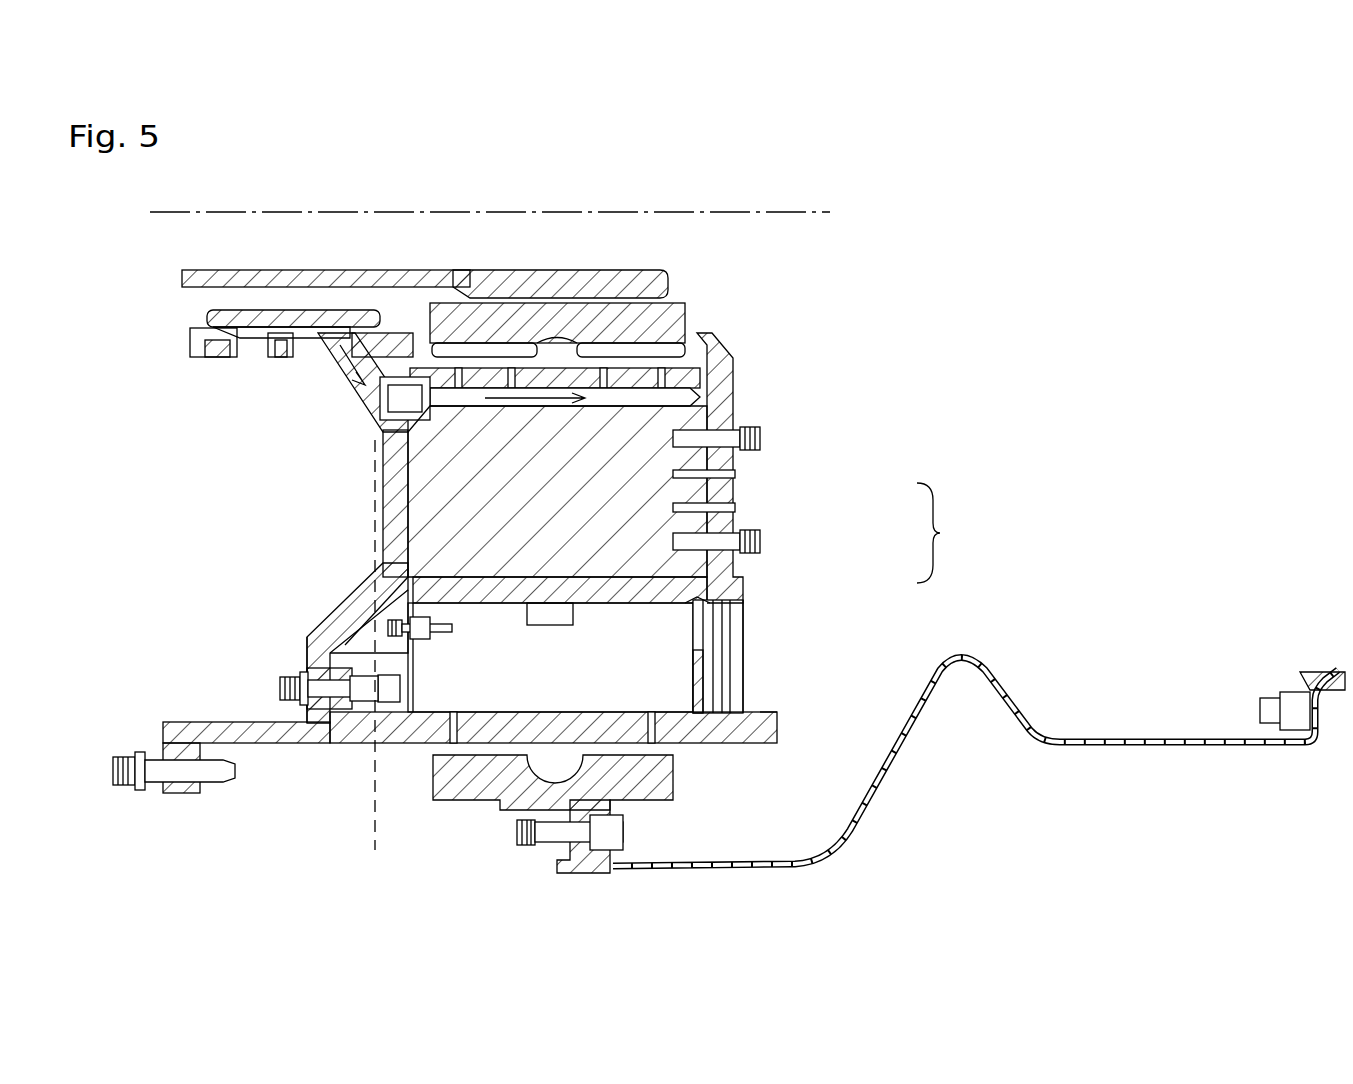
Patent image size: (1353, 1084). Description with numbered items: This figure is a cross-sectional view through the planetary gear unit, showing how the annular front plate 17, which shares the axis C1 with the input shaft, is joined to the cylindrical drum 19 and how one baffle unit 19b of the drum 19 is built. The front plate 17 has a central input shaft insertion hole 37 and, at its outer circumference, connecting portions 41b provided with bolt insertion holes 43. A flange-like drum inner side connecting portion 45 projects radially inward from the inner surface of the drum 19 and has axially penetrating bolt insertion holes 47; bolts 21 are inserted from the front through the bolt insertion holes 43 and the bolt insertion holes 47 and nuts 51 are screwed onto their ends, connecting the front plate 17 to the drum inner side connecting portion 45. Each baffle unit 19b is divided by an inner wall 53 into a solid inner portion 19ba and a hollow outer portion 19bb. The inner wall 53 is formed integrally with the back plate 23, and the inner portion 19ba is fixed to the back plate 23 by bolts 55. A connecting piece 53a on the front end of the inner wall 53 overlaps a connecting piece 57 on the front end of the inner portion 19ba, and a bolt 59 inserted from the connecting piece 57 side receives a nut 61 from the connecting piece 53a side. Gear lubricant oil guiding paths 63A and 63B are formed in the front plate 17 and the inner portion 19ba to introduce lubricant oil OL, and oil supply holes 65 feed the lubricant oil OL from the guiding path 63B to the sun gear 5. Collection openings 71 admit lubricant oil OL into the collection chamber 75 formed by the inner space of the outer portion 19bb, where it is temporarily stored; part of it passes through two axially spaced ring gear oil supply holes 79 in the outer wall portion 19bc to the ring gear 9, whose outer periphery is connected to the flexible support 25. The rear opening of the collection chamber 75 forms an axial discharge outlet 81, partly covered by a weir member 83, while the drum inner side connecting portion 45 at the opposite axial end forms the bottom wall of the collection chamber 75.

The sun gear 5 is at (687, 323).
The ring gear 9 is at (667, 782).
The front plate 17 is at (322, 620).
The drum 19 is at (303, 740).
The baffle unit 19b is at (958, 533).
The inner portion 19ba is at (667, 525).
The outer portion 19bb is at (743, 608).
The outer wall portion 19bc is at (750, 745).
The bolt 21 is at (283, 693).
The back plate 23 is at (735, 380).
The flexible support 25 is at (903, 733).
The input shaft insertion hole 37 is at (207, 357).
The connecting portion 41b is at (307, 645).
The bolt insertion hole 43 is at (280, 680).
The drum inner side connecting portion 45 is at (337, 620).
The bolt insertion hole 47 is at (333, 743).
The nut 51 is at (377, 733).
The inner wall 53 is at (597, 608).
The connecting piece 53a is at (415, 640).
The bolt 55 is at (753, 433).
The connecting piece 57 is at (400, 727).
The bolt 59 is at (362, 660).
The nut 61 is at (445, 621).
The gear lubricant oil guiding path 63A is at (370, 393).
The gear lubricant oil guiding path 63B is at (380, 442).
The oil supply hole 65 is at (425, 385).
The collection opening 71 is at (551, 625).
The collection chamber 75 is at (640, 688).
The ring gear oil supply hole 79 is at (470, 745).
The axial discharge outlet 81 is at (747, 693).
The weir member 83 is at (738, 635).
The lubricant oil OL is at (537, 400).
The axis C1 is at (727, 213).